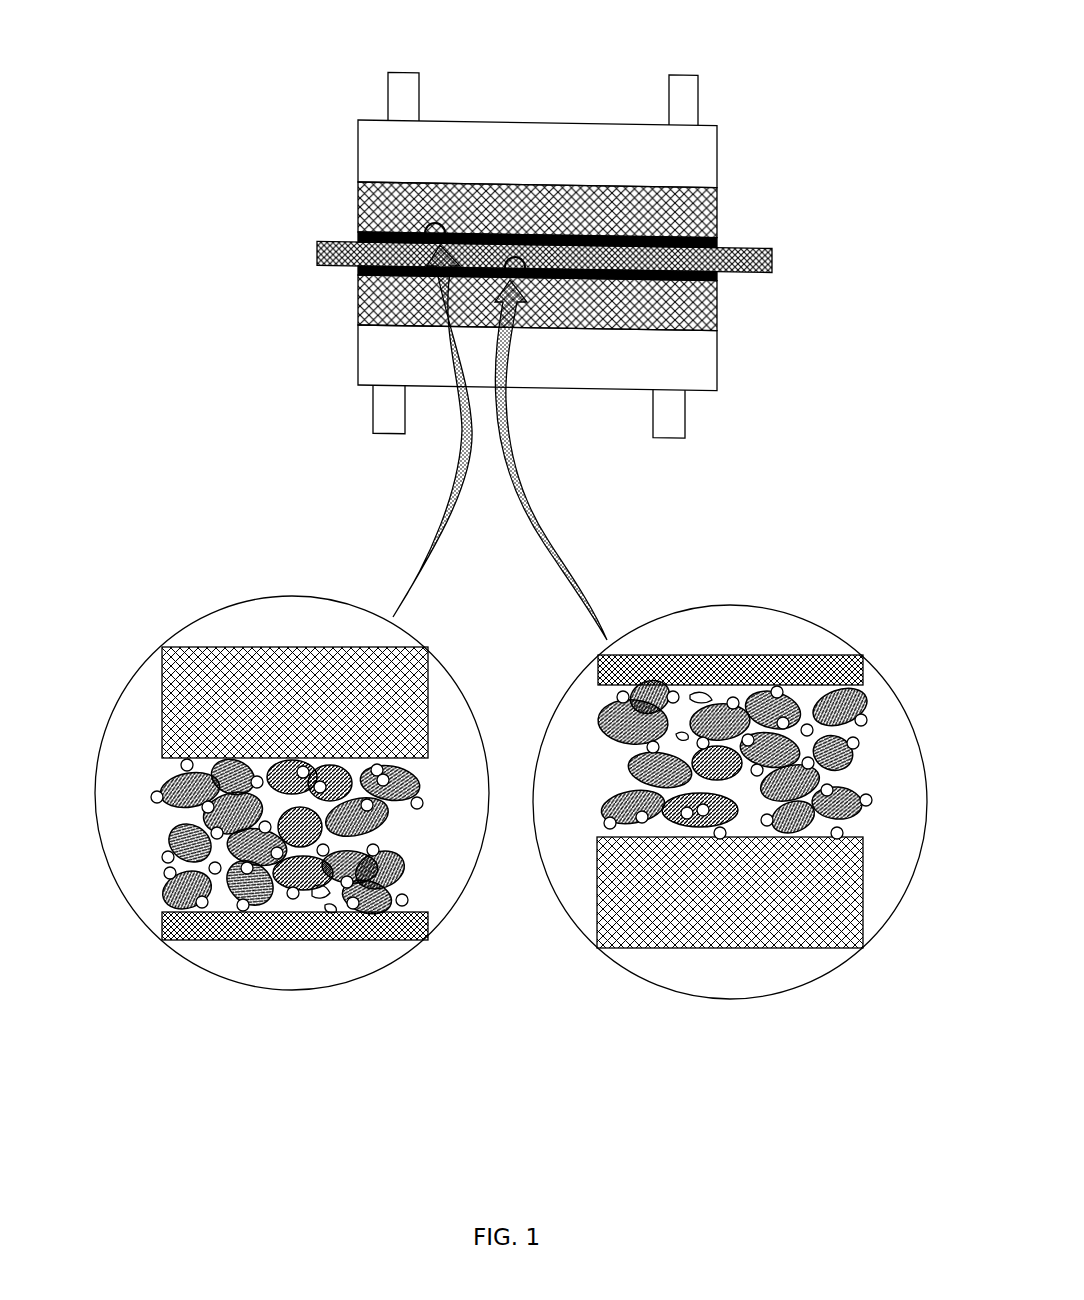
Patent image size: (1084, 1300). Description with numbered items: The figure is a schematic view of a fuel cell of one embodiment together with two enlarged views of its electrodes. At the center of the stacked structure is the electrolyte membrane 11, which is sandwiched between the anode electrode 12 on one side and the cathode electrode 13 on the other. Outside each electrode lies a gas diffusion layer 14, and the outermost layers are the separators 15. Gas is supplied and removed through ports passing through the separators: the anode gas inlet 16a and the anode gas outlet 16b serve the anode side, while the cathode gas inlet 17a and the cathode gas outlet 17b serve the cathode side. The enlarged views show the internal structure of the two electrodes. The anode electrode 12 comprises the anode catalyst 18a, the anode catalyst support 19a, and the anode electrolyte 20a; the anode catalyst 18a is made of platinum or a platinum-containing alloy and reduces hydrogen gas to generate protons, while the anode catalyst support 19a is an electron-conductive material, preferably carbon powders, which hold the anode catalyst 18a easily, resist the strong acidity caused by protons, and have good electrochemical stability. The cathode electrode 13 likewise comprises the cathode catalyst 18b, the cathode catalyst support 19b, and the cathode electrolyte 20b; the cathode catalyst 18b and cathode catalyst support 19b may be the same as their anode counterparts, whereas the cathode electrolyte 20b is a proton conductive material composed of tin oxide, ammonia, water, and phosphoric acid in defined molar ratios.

The electrolyte membrane 11 is at (772, 258).
The anode electrode 12 is at (717, 241).
The cathode electrode 13 is at (717, 273).
The gas diffusion layer 14 is at (355, 297).
The separator 15 is at (377, 355).
The anode gas inlet 16a is at (404, 56).
The anode gas outlet 16b is at (684, 63).
The cathode gas inlet 17a is at (390, 454).
The cathode gas outlet 17b is at (665, 448).
The anode catalyst 18a is at (402, 900).
The anode catalyst support 19a is at (253, 887).
The anode electrolyte 20a is at (317, 895).
The cathode catalyst 18b is at (617, 695).
The cathode catalyst support 19b is at (773, 708).
The cathode electrolyte 20b is at (705, 700).